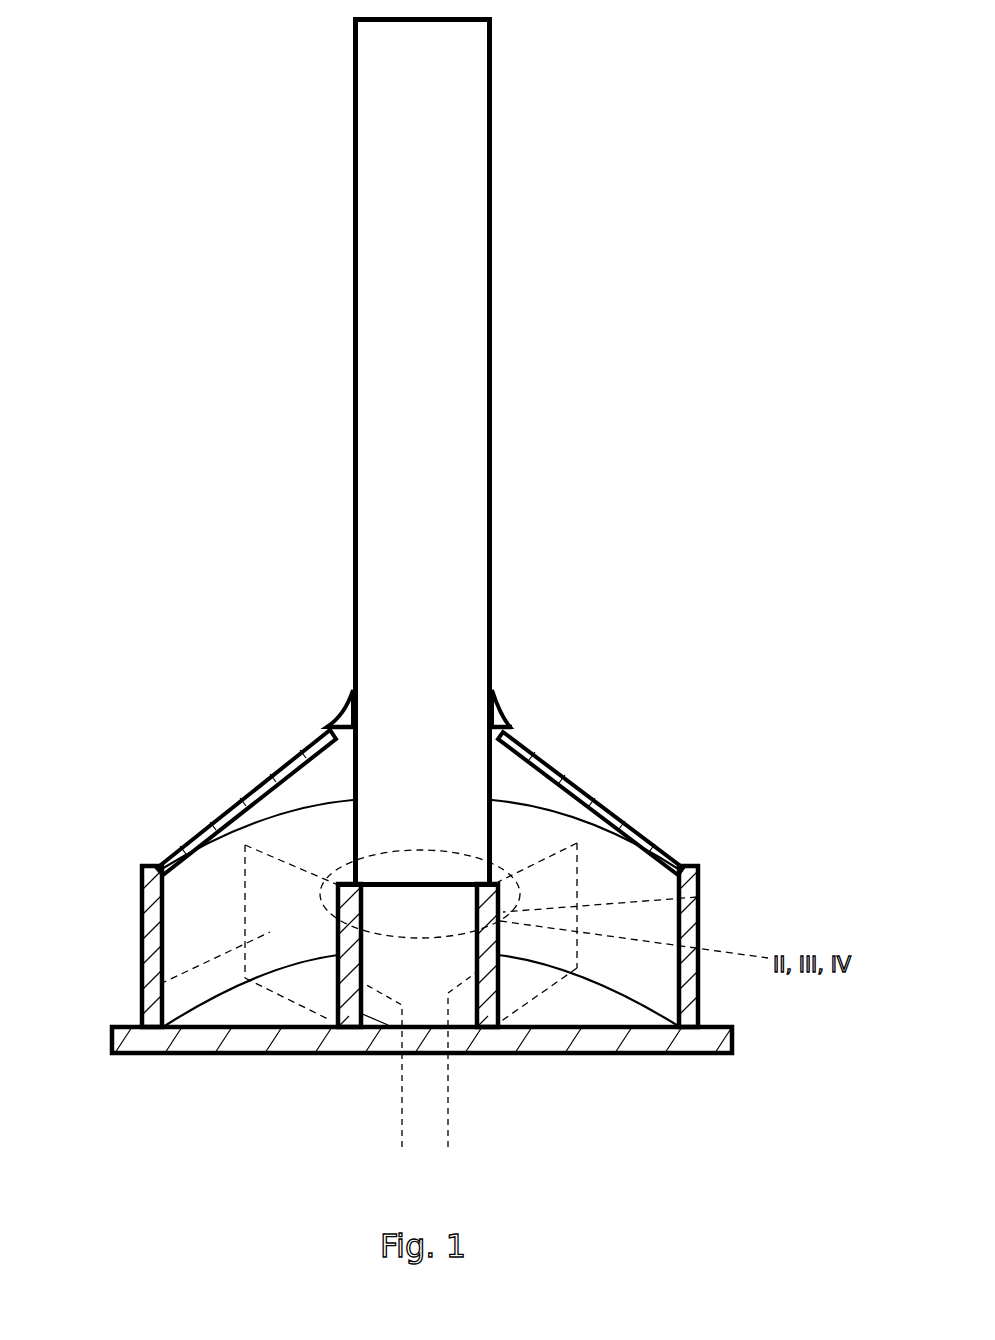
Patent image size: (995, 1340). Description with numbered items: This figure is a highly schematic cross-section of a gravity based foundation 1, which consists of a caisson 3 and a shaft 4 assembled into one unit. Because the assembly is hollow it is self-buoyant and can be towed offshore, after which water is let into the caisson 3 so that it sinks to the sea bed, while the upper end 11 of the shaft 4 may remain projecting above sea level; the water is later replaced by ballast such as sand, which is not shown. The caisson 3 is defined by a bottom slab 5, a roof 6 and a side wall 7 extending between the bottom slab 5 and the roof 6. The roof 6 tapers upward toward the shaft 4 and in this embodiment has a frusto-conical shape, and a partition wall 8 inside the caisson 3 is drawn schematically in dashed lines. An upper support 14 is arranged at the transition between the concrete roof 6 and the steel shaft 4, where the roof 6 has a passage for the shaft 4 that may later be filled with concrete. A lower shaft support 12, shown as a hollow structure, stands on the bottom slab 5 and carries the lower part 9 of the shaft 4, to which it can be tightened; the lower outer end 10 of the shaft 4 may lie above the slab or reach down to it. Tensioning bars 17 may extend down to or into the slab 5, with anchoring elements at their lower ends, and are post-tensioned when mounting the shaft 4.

The gravity based foundation 1 is at (575, 500).
The caisson 3 is at (677, 758).
The shaft 4 is at (354, 237).
The bottom slab 5 is at (527, 1053).
The roof 6 is at (250, 795).
The side wall 7 is at (142, 928).
The partition wall 8 is at (698, 897).
The lower part of the shaft 9 is at (440, 782).
The lower outer end of the shaft 10 is at (455, 880).
The upper end of the shaft 11 is at (410, 22).
The shaft support 12 is at (387, 1027).
The upper support 14 is at (343, 702).
The tensioning bars 17 is at (420, 1070).